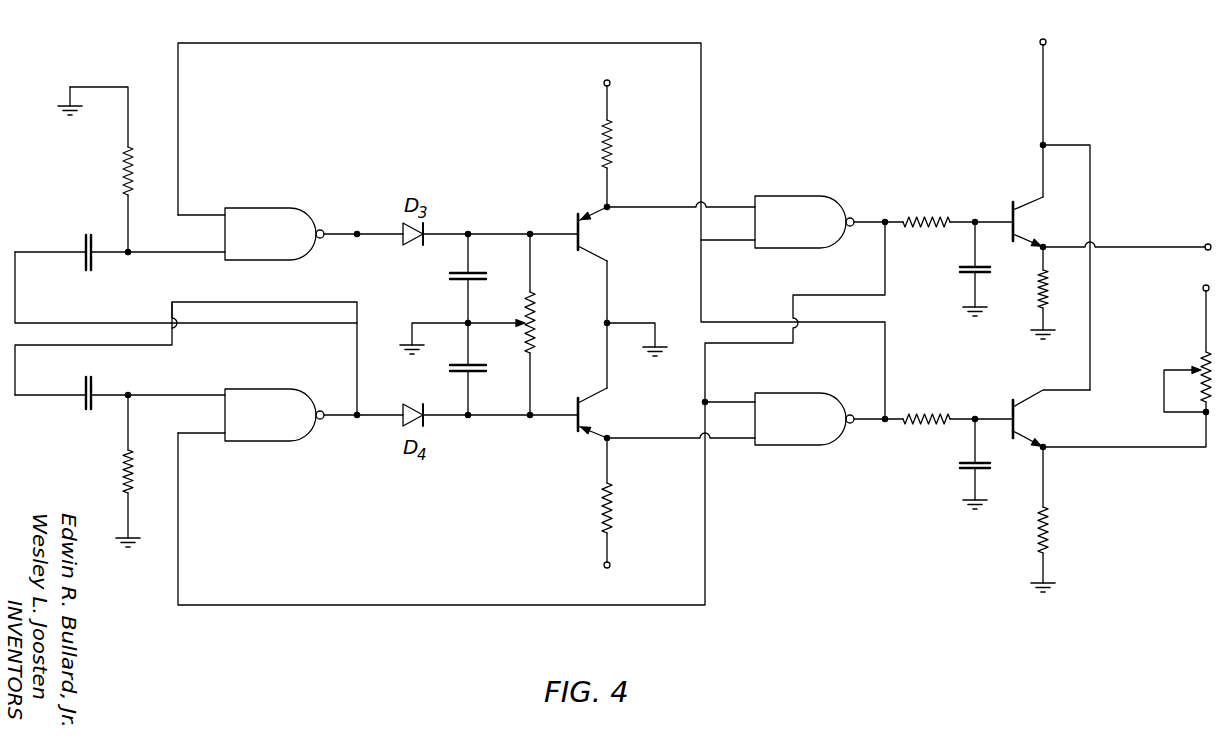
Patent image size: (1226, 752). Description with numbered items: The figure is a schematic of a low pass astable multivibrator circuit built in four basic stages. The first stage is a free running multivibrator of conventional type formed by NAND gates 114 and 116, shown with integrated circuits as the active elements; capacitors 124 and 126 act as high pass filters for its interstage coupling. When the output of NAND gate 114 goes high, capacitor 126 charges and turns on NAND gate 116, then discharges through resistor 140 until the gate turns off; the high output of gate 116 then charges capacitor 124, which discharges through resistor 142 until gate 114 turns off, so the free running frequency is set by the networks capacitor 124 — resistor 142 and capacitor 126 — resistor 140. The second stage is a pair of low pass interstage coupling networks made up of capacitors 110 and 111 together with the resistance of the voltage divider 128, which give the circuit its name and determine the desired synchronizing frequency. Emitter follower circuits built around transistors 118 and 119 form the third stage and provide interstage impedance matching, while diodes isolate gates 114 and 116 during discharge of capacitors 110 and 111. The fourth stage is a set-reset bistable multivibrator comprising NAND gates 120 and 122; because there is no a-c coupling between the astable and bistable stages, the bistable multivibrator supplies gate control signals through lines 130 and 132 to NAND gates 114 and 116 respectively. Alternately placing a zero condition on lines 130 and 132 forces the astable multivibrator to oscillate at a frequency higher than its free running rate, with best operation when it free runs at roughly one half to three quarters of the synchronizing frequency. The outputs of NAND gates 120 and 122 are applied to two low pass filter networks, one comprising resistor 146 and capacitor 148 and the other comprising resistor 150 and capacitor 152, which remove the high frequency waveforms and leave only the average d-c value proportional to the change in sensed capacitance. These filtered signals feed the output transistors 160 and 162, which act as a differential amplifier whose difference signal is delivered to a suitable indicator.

The capacitor 110 is at (457, 279).
The capacitor 111 is at (474, 374).
The NAND gate 114 is at (268, 208).
The NAND gate 116 is at (289, 441).
The transistor 118 is at (603, 229).
The transistor 119 is at (602, 410).
The NAND gate 120 is at (805, 196).
The NAND gate 122 is at (813, 445).
The capacitor 124 is at (82, 241).
The capacitor 126 is at (82, 401).
The voltage divider 128 is at (537, 303).
The line 130 is at (405, 43).
The line 132 is at (376, 605).
The resistor 140 is at (133, 478).
The resistor 142 is at (123, 167).
The resistor 146 is at (935, 213).
The capacitor 148 is at (967, 276).
The resistor 150 is at (937, 414).
The capacitor 152 is at (967, 469).
The transistor 160 is at (1032, 217).
The transistor 162 is at (1040, 417).